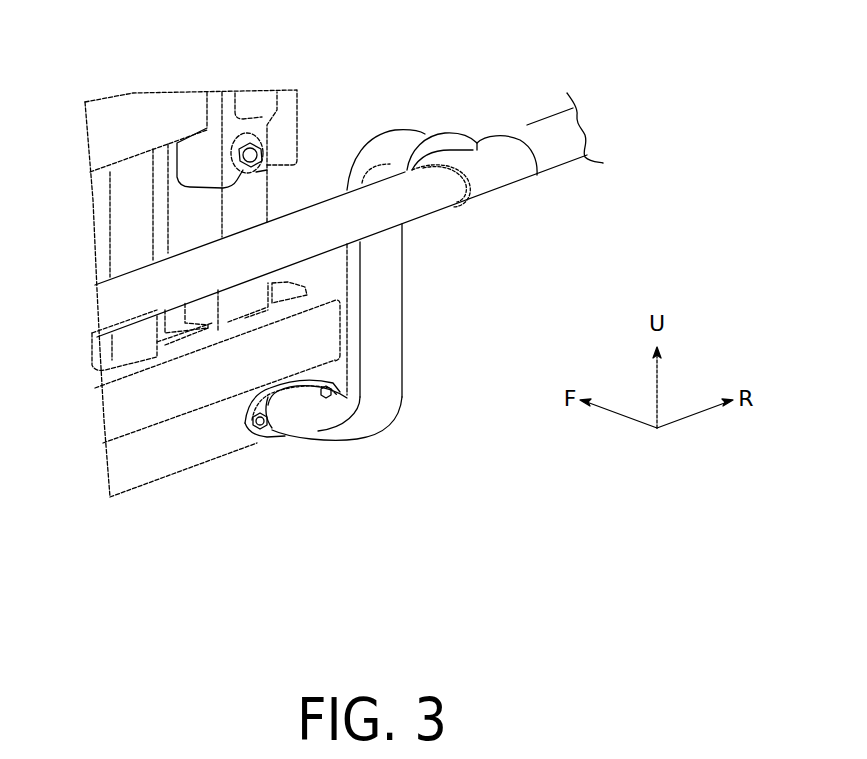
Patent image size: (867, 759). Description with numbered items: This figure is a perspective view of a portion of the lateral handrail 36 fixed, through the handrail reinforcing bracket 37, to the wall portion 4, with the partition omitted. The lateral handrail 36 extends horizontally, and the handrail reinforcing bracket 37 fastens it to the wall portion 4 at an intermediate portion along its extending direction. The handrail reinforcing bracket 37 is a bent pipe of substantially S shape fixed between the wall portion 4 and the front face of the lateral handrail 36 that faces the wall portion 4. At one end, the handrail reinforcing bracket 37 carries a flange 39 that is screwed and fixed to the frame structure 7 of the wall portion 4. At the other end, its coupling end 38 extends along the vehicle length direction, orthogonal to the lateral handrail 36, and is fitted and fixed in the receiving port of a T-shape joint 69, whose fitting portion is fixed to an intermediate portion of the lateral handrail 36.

The wall portion 4 is at (185, 467).
The frame structure 7 is at (158, 127).
The lateral handrail 36 is at (527, 110).
The handrail reinforcing bracket 37 is at (392, 403).
The coupling end 38 is at (405, 140).
The flange 39 is at (263, 398).
The T-shape joint 69 is at (492, 178).